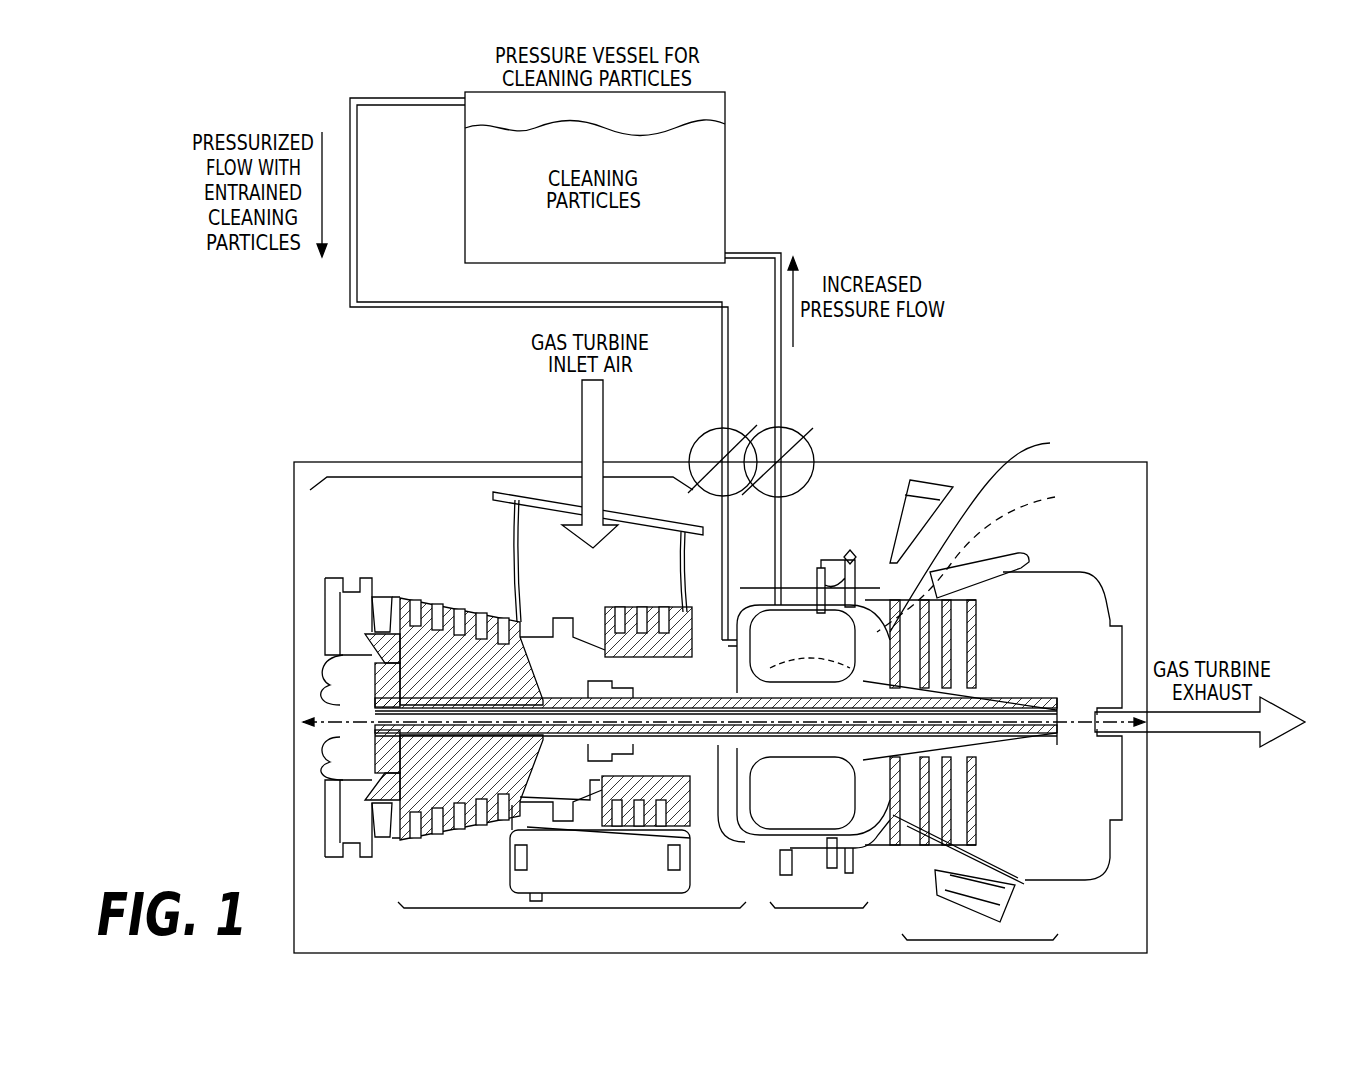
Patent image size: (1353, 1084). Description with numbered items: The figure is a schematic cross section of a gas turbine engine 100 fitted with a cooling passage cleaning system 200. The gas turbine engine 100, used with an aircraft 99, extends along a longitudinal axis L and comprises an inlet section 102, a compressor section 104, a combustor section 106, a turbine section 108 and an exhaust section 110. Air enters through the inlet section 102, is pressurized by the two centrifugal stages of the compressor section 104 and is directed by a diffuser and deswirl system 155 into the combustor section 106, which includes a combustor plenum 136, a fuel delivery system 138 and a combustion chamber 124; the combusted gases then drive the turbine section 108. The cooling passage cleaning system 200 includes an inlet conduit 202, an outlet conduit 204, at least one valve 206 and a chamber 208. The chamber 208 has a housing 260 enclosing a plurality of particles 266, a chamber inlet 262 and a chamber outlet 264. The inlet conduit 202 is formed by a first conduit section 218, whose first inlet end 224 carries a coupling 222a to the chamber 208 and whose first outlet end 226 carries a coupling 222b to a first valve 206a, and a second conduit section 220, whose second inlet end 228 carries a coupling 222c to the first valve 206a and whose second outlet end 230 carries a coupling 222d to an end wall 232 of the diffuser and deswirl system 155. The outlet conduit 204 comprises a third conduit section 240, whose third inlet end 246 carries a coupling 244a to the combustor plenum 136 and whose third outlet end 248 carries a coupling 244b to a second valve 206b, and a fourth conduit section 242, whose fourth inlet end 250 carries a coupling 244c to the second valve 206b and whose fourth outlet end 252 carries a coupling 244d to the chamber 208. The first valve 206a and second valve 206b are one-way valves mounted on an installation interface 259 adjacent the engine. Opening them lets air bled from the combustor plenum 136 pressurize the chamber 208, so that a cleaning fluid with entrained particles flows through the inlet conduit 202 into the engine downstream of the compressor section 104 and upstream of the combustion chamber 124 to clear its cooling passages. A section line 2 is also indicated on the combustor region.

The cooling passage cleaning system 200 is at (306, 102).
The first inlet end 224 is at (460, 96).
The chamber outlet 264 is at (466, 97).
The plurality of particles 266 is at (690, 128).
The housing 260 is at (727, 96).
The chamber 208 is at (742, 108).
The coupling 222a is at (465, 107).
The chamber inlet 262 is at (725, 256).
The coupling 244d is at (726, 253).
The fourth conduit section 242 is at (798, 199).
The outlet conduit 204 is at (822, 227).
The fourth outlet end 252 is at (730, 270).
The inlet conduit 202 is at (370, 321).
The first conduit section 218 is at (472, 326).
The first valve 206a is at (721, 428).
The coupling 244c is at (753, 429).
The coupling 222b is at (703, 448).
The fourth inlet end 250 is at (792, 427).
The valve 206 is at (804, 409).
The second valve 206b is at (800, 440).
The installation interface 259 is at (889, 409).
The coupling 244b is at (808, 440).
The coupling 244a is at (795, 560).
The first outlet end 226 is at (701, 451).
The second inlet end 228 is at (684, 488).
The third outlet end 248 is at (736, 480).
The third conduit section 240 is at (797, 522).
The third inlet end 246 is at (800, 575).
The fuel delivery system 138 is at (866, 560).
The section line 2 is at (977, 558).
The combustion chamber 124 is at (1050, 443).
The gas turbine engine 100 is at (1112, 559).
The inlet section 102 is at (440, 462).
The coupling 222c is at (701, 572).
The second conduit section 220 is at (700, 564).
The coupling 222d is at (740, 657).
The end wall 232 is at (800, 664).
The second outlet end 230 is at (727, 670).
The diffuser and deswirl system 155 is at (782, 799).
The compressor section 104 is at (590, 910).
The combustor plenum 136 is at (775, 850).
The combustor section 106 is at (812, 908).
The turbine section 108 is at (887, 840).
The exhaust section 110 is at (1058, 938).
The aircraft 99 is at (1120, 952).
The longitudinal axis L is at (328, 774).